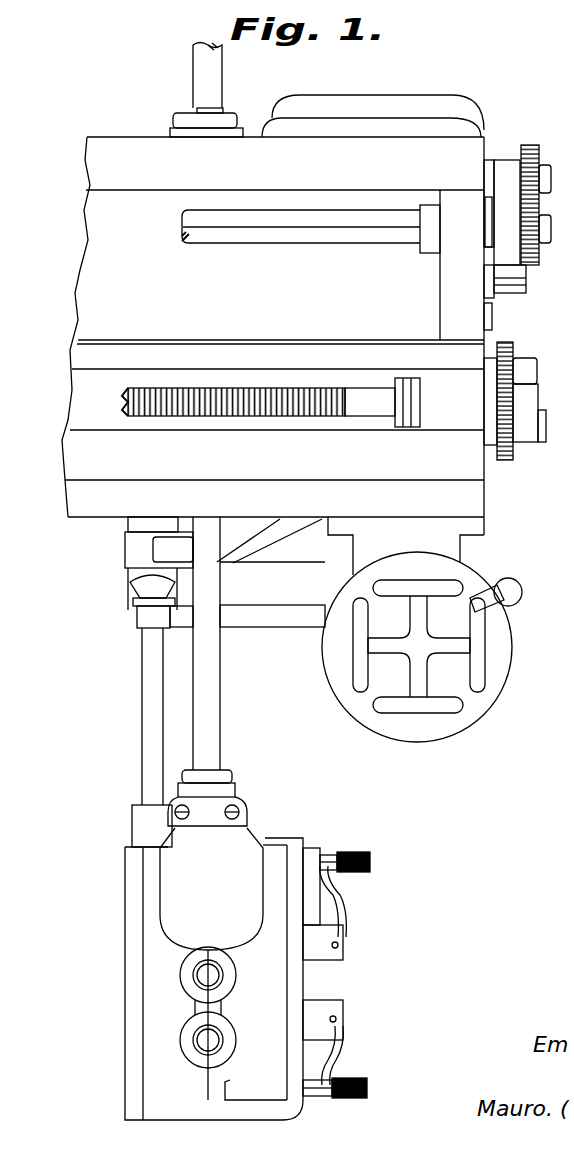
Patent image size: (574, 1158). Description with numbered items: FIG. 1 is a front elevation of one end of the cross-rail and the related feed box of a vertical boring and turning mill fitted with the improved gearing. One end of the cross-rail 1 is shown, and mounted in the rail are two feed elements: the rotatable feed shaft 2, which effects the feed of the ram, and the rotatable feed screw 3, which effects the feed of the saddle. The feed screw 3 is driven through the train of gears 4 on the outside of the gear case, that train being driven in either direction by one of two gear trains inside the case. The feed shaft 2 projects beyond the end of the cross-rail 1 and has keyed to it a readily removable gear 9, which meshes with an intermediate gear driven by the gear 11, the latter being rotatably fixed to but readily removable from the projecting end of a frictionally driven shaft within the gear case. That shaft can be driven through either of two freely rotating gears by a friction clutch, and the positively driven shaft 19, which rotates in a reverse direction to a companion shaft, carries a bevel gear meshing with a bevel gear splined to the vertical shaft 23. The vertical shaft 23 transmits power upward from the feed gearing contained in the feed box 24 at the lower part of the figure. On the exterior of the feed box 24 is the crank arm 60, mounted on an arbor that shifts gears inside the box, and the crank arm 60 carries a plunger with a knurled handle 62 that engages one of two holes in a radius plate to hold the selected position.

The cross-rail 1 is at (102, 272).
The feed shaft 2 is at (343, 238).
The feed screw 3 is at (172, 388).
The train of gears 4 is at (513, 420).
The gear 9 is at (521, 198).
The gear 11 is at (536, 147).
The shaft 19 is at (510, 291).
The vertical shaft 23 is at (212, 718).
The feed box 24 is at (272, 1001).
The crank arm 60 is at (342, 909).
The knurled handle 62 is at (362, 853).